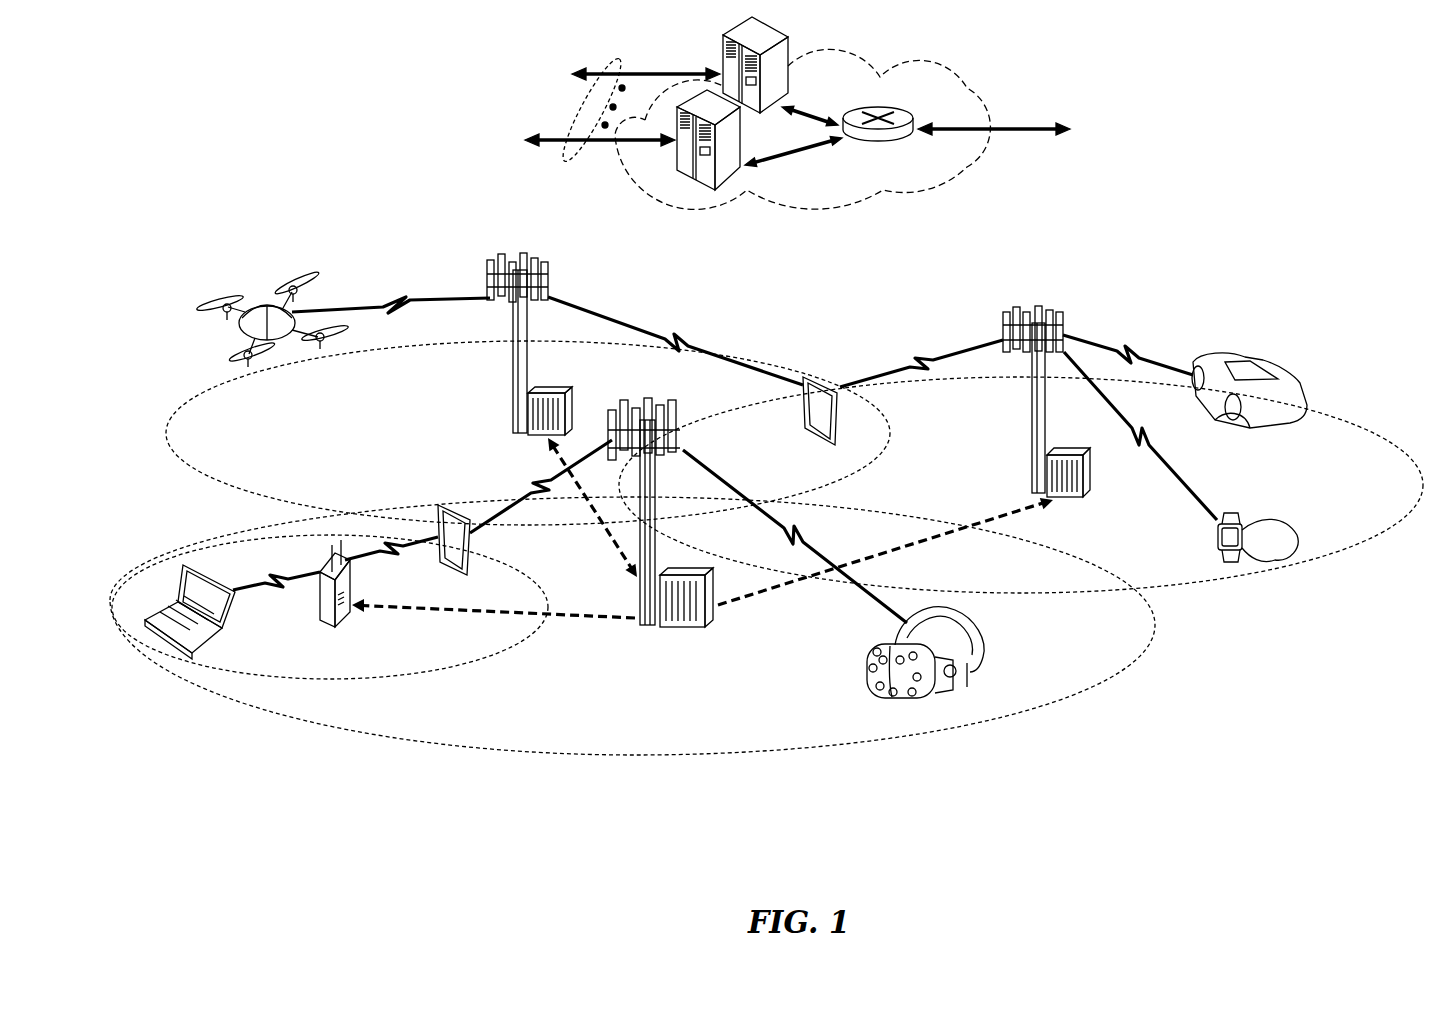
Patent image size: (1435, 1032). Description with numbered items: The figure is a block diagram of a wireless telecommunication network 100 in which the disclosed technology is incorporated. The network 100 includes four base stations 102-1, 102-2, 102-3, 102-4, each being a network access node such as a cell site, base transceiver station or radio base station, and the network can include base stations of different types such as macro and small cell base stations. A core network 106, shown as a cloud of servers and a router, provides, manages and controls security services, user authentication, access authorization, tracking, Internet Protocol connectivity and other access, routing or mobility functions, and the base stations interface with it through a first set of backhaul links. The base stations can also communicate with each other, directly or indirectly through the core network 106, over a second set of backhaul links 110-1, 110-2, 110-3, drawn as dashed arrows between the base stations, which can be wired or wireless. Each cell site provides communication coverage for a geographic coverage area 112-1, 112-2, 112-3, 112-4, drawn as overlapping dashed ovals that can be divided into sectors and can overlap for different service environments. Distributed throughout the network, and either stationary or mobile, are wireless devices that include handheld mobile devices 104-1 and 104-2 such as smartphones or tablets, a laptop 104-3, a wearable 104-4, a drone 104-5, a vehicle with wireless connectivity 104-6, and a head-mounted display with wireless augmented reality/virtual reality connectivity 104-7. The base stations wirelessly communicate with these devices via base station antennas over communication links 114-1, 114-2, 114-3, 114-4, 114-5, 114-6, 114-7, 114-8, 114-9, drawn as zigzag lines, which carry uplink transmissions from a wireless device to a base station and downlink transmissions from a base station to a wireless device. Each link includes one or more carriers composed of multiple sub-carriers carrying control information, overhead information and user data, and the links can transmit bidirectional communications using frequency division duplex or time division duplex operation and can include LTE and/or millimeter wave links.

The wireless telecommunication network 100 is at (1318, 122).
The core network 106 is at (906, 192).
The base station 102-1 is at (647, 627).
The base station 102-2 is at (512, 380).
The base station 102-3 is at (1028, 415).
The base station 102-4 is at (320, 615).
The handheld mobile device 104-1 is at (473, 552).
The handheld mobile device 104-2 is at (800, 413).
The laptop 104-3 is at (172, 647).
The wearable 104-4 is at (1230, 518).
The drone 104-5 is at (280, 347).
The vehicle with wireless connectivity 104-6 is at (1270, 372).
The head-mounted display 104-7 is at (985, 637).
The backhaul link 110-1 is at (388, 610).
The backhaul link 110-2 is at (950, 537).
The backhaul link 110-3 is at (610, 535).
The geographic coverage area 112-1 is at (575, 757).
The geographic coverage area 112-2 is at (453, 668).
The geographic coverage area 112-3 is at (232, 487).
The geographic coverage area 112-4 is at (1327, 418).
The communication link 114-1 is at (798, 538).
The communication link 114-2 is at (535, 487).
The communication link 114-3 is at (248, 590).
The communication link 114-4 is at (392, 552).
The communication link 114-5 is at (398, 300).
The communication link 114-6 is at (680, 335).
The communication link 114-7 is at (923, 355).
The communication link 114-8 is at (1160, 453).
The communication link 114-9 is at (1123, 343).